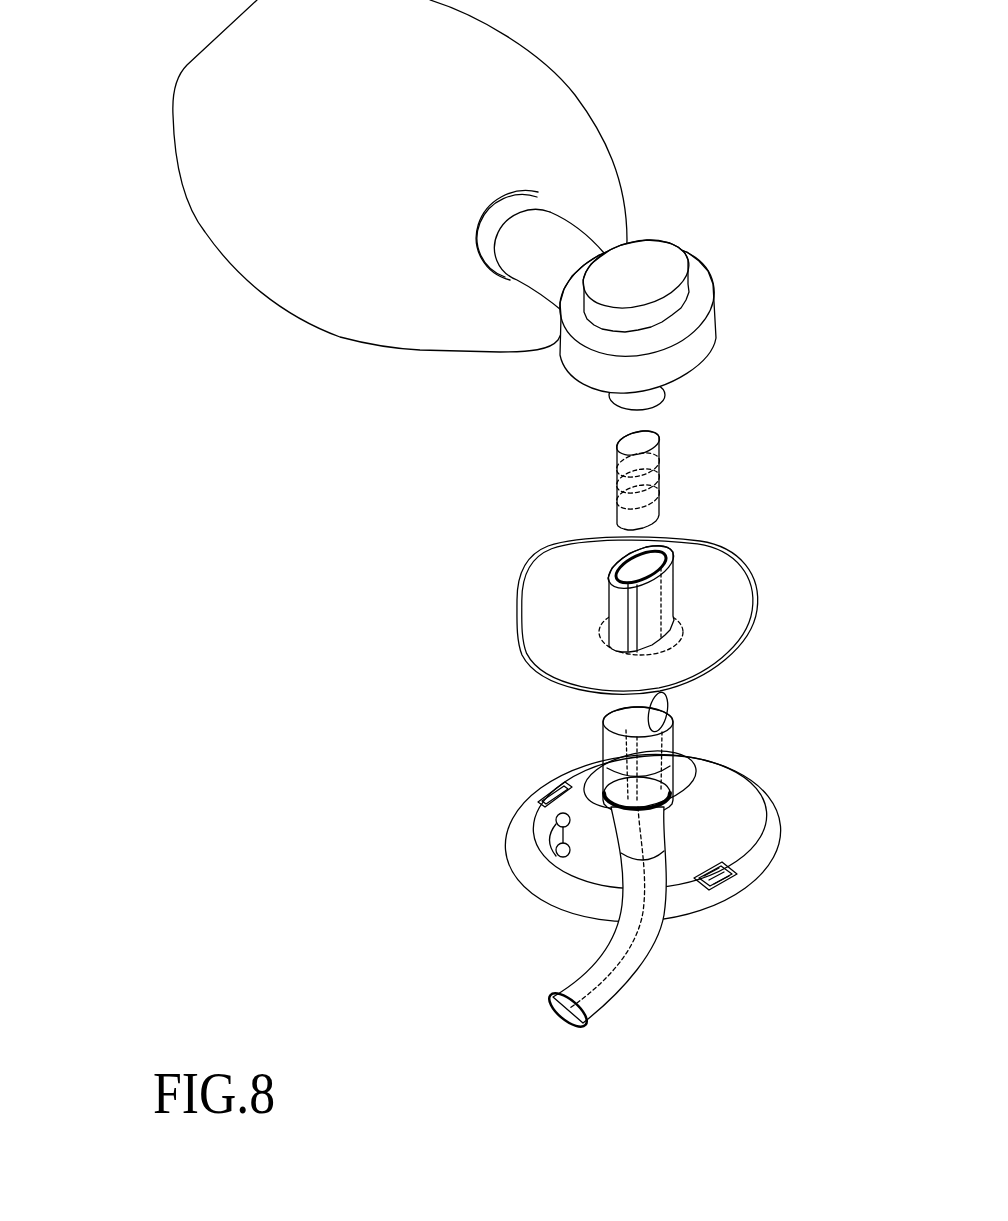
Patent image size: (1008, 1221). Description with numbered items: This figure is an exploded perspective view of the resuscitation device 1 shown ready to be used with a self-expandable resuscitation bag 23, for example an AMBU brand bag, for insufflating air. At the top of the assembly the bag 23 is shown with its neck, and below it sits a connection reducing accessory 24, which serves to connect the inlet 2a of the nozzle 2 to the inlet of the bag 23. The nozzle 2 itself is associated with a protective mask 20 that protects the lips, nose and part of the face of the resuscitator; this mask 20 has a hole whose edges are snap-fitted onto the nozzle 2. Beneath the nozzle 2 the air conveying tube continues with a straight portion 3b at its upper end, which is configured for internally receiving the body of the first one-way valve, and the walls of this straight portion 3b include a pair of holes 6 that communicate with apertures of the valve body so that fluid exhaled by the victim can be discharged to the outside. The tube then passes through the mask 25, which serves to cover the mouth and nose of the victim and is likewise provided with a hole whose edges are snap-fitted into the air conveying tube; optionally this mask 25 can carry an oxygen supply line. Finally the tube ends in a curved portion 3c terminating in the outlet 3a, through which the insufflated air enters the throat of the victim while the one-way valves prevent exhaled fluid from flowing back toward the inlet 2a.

The device for resuscitation 1 is at (501, 751).
The nozzle 2 is at (695, 561).
The inlet 2a is at (668, 558).
The outlet 3a is at (552, 1005).
The straight portion 3b is at (606, 742).
The curved portion 3c is at (572, 921).
The holes 6 is at (650, 711).
The protective mask 20 is at (543, 632).
The self-expandable resuscitation bag 23 is at (303, 342).
The connection reducing accessory 24 is at (617, 490).
The mask 25 is at (557, 885).